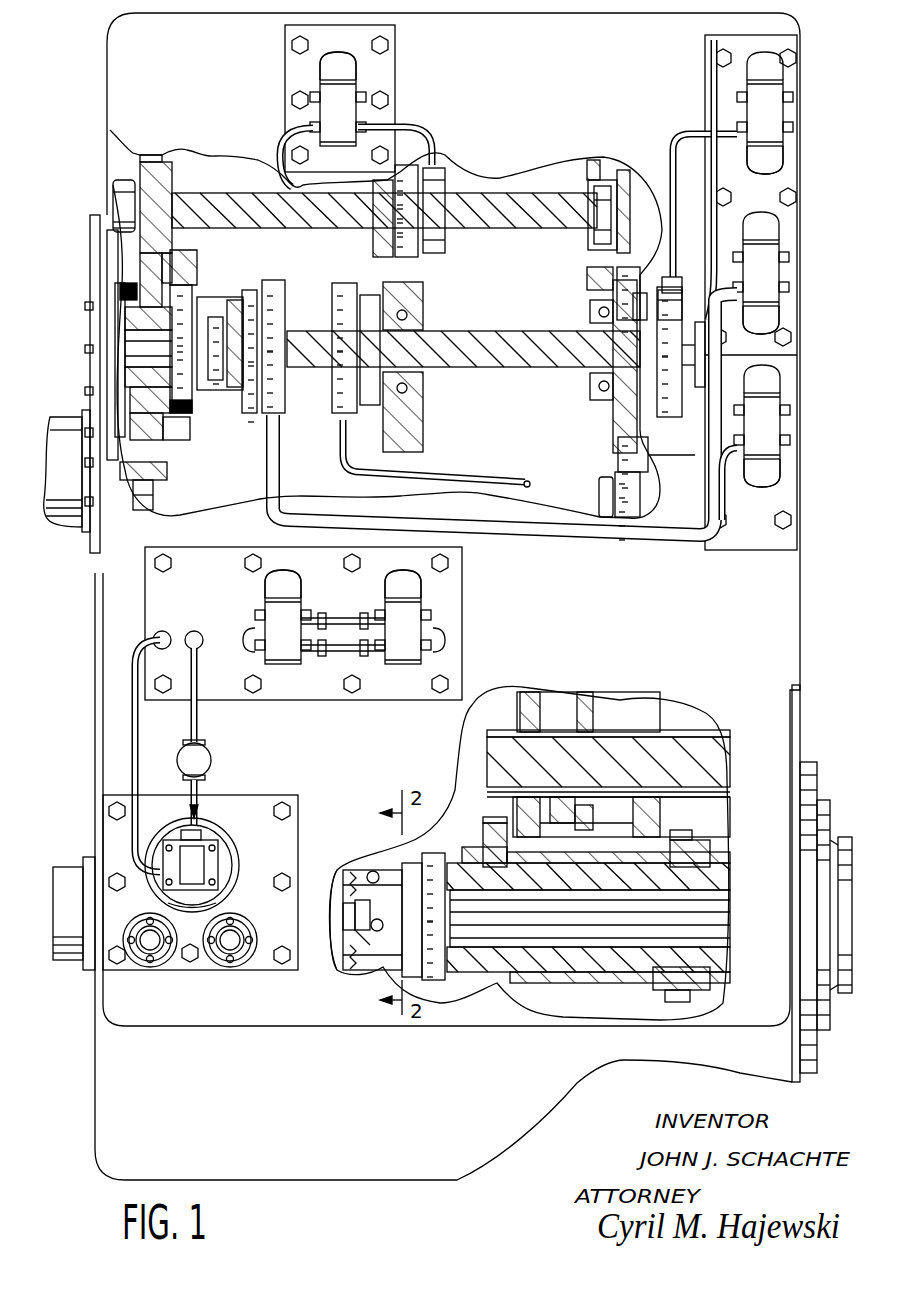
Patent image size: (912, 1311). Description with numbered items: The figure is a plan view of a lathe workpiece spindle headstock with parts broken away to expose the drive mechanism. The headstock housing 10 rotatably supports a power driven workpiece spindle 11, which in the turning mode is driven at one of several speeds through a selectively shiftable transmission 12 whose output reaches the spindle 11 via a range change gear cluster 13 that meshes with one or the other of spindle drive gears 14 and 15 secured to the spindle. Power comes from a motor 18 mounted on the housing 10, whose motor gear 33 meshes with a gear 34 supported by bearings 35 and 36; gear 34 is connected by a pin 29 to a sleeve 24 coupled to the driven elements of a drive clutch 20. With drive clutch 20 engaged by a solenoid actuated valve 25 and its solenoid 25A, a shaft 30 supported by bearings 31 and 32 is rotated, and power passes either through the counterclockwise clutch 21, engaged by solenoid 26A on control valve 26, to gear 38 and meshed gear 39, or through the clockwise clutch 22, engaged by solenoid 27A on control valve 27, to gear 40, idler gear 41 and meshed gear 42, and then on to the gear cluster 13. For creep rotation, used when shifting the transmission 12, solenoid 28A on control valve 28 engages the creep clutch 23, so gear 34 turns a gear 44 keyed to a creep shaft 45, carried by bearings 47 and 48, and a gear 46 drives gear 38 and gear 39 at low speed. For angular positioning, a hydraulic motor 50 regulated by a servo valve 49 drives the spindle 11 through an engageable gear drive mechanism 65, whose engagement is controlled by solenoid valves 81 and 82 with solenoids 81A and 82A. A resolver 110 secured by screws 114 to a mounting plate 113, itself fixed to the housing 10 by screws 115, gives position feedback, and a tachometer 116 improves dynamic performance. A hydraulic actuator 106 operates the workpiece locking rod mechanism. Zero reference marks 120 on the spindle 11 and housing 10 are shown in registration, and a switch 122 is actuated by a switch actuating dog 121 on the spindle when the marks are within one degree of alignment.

The workpiece spindle headstock housing 10 is at (125, 1165).
The workpiece spindle 11 is at (578, 1000).
The transmission 12 is at (520, 185).
The range change gear cluster 13 is at (670, 712).
The spindle drive gear 14 is at (495, 825).
The spindle drive gear 15 is at (695, 845).
The motor 18 is at (60, 490).
The drive clutch 20 is at (275, 282).
The counterclockwise clutch 21 is at (345, 285).
The clockwise clutch 22 is at (663, 253).
The creep clutch 23 is at (440, 165).
The sleeve 24 is at (140, 360).
The solenoid actuated valve 25 is at (788, 430).
The solenoid 25A is at (765, 480).
The control valve 26 is at (788, 270).
The solenoid 26A is at (770, 330).
The control valve 27 is at (742, 108).
The solenoid 27A is at (770, 165).
The control valve 28 is at (360, 80).
The creep clutch solenoid 28A is at (345, 62).
The pin 29 is at (150, 290).
The shaft 30 is at (508, 355).
The bearing 31 is at (215, 380).
The bearing 32 is at (700, 365).
The motor gear 33 is at (155, 495).
The gear 34 is at (150, 282).
The bearing 35 is at (130, 318).
The bearing 36 is at (195, 283).
The gear 38 is at (420, 395).
The gear 39 is at (420, 460).
The gear 40 is at (668, 303).
The idler gear 41 is at (620, 455).
The gear 42 is at (637, 515).
The gear 44 is at (140, 165).
The creep shaft 45 is at (177, 205).
The gear 46 is at (380, 235).
The bearing 47 is at (120, 195).
The bearing 48 is at (605, 220).
The servo valve 49 is at (200, 848).
The hydraulic motor 50 is at (220, 868).
The gear drive mechanism 65 is at (345, 970).
The solenoid valve 81 is at (290, 665).
The solenoid 81A is at (283, 572).
The solenoid valve 82 is at (408, 665).
The solenoid 82A is at (415, 580).
The hydraulic actuator 106 is at (70, 875).
The resolver 110 is at (235, 945).
The mounting plate 113 is at (268, 962).
The screws 114 is at (135, 945).
The screws 115 is at (282, 811).
The tachometer 116 is at (158, 940).
The reference marks 120 is at (802, 917).
The switch actuating dog 121 is at (398, 870).
The switch 122 is at (375, 950).